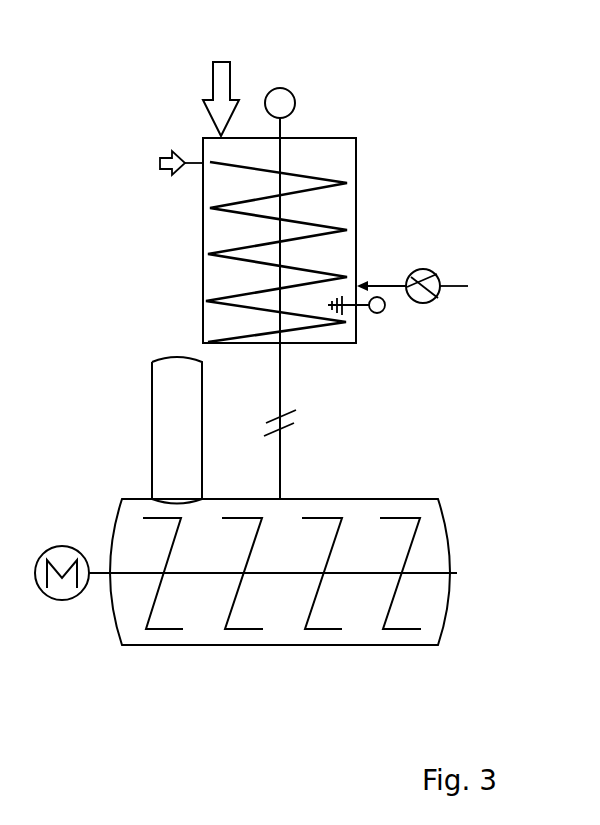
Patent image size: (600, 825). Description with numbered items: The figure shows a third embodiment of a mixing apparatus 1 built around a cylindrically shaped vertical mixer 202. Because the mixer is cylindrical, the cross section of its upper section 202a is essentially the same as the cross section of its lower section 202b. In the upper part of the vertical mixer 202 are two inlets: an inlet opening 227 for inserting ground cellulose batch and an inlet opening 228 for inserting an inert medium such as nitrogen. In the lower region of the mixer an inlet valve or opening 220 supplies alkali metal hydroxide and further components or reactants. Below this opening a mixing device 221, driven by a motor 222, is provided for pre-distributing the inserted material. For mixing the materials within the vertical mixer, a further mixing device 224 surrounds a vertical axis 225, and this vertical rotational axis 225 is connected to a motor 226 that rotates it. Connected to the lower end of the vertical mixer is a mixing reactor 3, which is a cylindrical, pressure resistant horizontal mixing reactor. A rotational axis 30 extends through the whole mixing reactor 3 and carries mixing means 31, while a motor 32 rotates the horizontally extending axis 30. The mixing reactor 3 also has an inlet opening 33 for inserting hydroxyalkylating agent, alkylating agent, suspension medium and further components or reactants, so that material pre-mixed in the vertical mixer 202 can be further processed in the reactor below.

The mixing apparatus 1 is at (98, 96).
The mixing reactor 3 is at (445, 550).
The rotational axis 30 is at (428, 574).
The mixing means 31 is at (417, 528).
The motor 32 is at (78, 560).
The inlet opening 33 is at (386, 490).
The vertical mixer 202 is at (333, 130).
The upper section 202a is at (358, 207).
The lower section 202b is at (204, 318).
The inlet valve or opening 220 is at (415, 270).
The mixing device 221 is at (349, 313).
The motor 222 is at (380, 313).
The mixing device 224 is at (336, 183).
The vertical axis 225 is at (280, 237).
The motor 226 is at (285, 100).
The inlet opening 227 is at (222, 83).
The inlet opening 228 is at (172, 169).